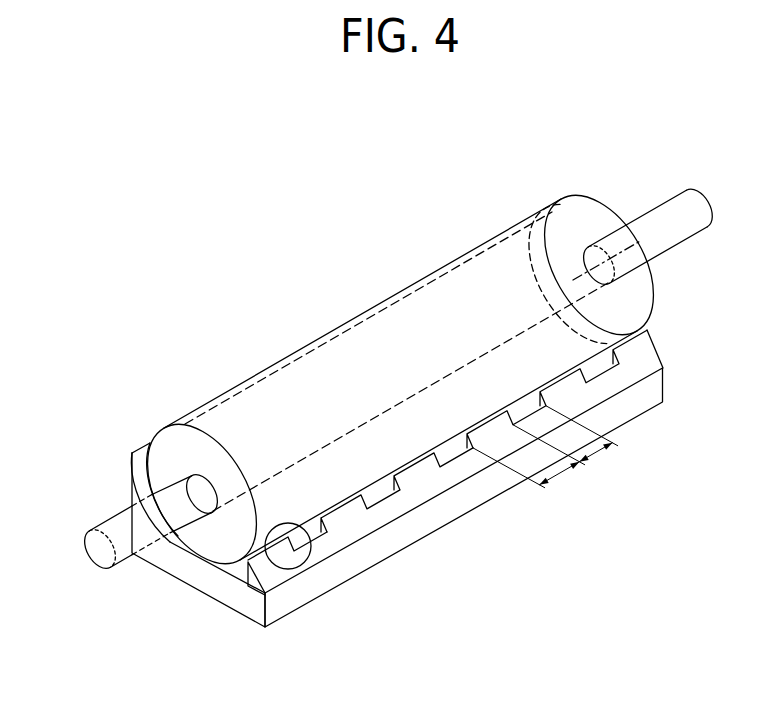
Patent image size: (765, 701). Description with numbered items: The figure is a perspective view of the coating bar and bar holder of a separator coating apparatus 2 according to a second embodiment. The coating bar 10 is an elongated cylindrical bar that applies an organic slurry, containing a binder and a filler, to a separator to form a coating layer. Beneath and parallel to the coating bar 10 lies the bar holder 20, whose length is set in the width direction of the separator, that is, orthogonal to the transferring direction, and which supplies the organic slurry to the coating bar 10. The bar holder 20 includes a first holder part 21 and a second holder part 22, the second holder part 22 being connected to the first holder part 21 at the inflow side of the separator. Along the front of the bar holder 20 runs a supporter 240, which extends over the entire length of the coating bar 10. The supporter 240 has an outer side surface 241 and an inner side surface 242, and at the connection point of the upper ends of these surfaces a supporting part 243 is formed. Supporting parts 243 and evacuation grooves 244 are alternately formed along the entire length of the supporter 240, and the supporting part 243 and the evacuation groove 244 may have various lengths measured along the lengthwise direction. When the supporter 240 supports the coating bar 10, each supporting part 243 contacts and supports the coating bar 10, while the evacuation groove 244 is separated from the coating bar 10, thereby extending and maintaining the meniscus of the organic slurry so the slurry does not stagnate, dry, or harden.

The separator coating apparatus 2 is at (306, 238).
The coating bar 10 is at (606, 194).
The bar holder 20 is at (195, 596).
The first holder part 21 is at (167, 560).
The second holder part 22 is at (131, 476).
The supporter 240 is at (621, 400).
The outer side surface 241 is at (344, 536).
The inner side surface 242 is at (245, 578).
The supporting part 243 is at (305, 566).
The evacuation groove 244 is at (429, 522).